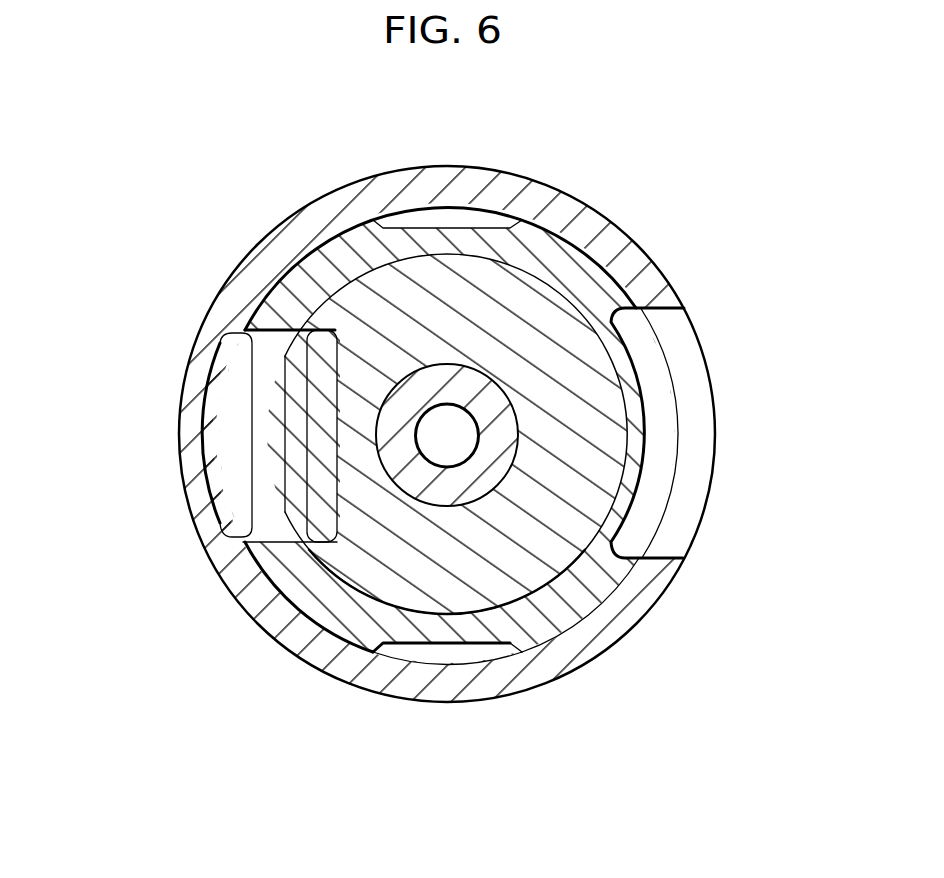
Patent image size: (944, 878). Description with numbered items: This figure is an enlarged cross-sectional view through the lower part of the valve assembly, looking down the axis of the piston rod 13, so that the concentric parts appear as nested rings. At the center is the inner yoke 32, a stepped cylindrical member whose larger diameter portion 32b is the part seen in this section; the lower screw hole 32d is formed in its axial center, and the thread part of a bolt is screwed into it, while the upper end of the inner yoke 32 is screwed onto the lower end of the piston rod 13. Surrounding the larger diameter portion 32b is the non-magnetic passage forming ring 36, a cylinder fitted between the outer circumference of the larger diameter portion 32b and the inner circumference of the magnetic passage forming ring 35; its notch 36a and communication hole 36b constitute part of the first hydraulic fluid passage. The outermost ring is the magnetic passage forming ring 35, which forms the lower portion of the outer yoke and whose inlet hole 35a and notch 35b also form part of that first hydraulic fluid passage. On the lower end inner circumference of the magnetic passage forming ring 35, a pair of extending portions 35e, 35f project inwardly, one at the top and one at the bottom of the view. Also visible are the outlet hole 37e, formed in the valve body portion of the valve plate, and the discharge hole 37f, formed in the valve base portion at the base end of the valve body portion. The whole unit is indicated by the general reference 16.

The pump unit assembly 16 is at (545, 128).
The piston rod 13 is at (411, 490).
The inner yoke 32 is at (548, 590).
The larger diameter portion 32b is at (527, 650).
The lower screw hole 32d is at (278, 547).
The magnetic passage forming ring 35 is at (605, 215).
The inlet hole 35a is at (692, 468).
The notch 35b is at (224, 429).
The extending portion 35e is at (444, 218).
The extending portion 35f is at (439, 655).
The non-magnetic passage forming ring 36 is at (284, 267).
The notch 36a is at (661, 407).
The communication hole 36b is at (268, 352).
The outlet hole 37e is at (314, 432).
The discharge hole 37f is at (173, 435).